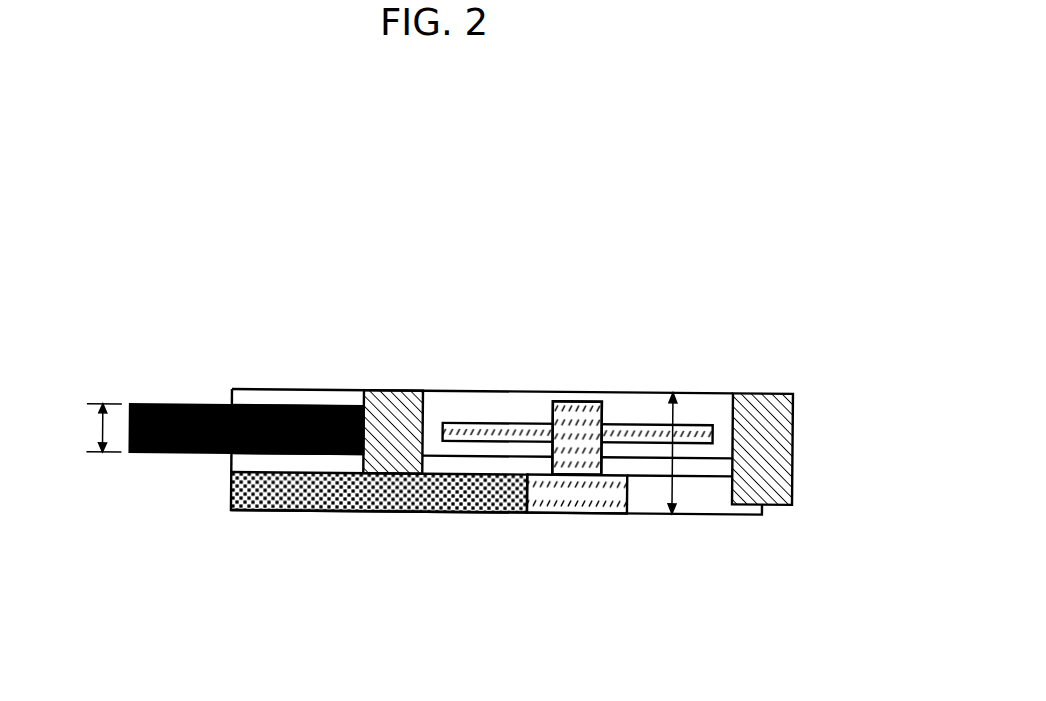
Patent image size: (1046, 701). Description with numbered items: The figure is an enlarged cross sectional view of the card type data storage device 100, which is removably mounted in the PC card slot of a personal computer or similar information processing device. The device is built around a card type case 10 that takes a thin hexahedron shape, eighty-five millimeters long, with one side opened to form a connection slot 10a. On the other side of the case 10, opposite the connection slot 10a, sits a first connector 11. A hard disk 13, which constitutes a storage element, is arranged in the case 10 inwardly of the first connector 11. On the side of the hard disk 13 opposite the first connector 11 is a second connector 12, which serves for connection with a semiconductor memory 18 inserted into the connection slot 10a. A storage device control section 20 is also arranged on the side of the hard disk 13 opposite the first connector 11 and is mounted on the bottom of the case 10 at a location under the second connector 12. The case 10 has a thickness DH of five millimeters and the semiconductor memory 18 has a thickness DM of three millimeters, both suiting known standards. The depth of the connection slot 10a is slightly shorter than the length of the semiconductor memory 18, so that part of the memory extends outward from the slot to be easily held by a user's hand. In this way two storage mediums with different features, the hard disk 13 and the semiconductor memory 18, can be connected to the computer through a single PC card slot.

The card type data storage device 100 is at (583, 213).
The card type case 10 is at (480, 390).
The connection slot 10a is at (232, 463).
The first connector 11 is at (752, 408).
The second connector 12 is at (388, 390).
The hard disk 13 is at (632, 425).
The semiconductor memory 18 is at (188, 405).
The storage device control section 20 is at (402, 503).
The thickness of the semiconductor memory DM is at (95, 425).
The thickness of the case DH is at (660, 418).